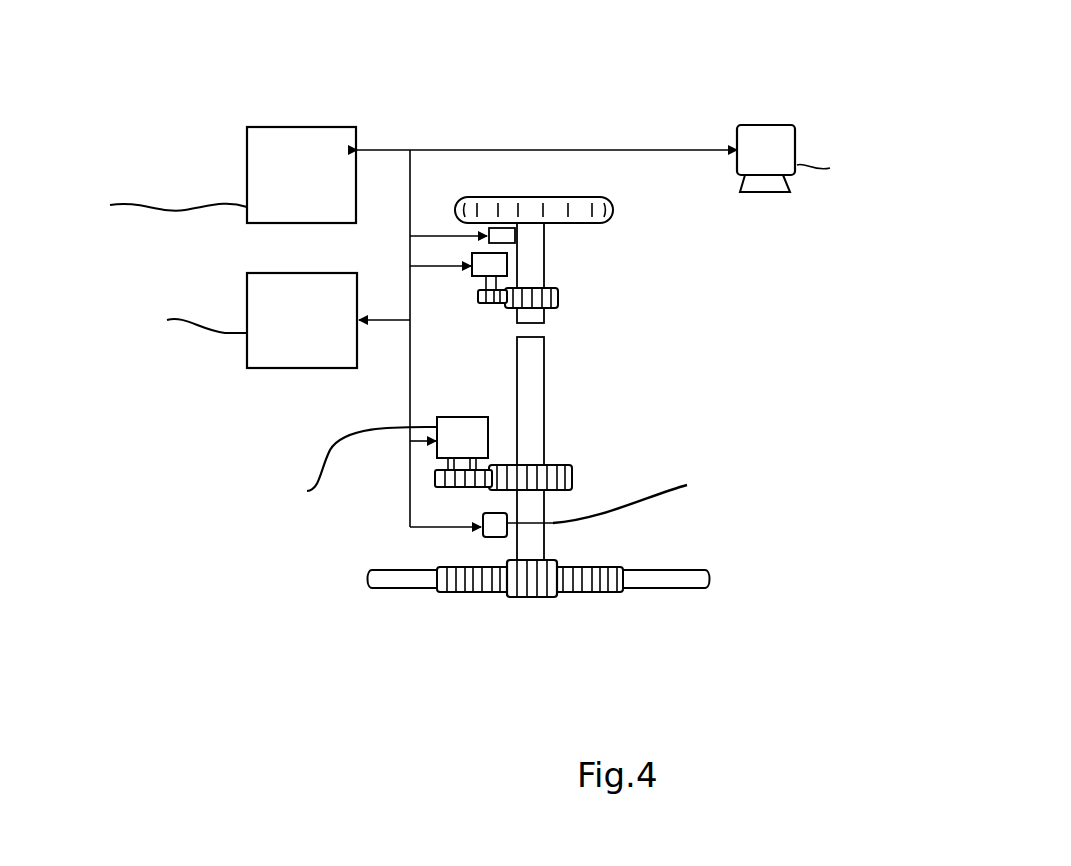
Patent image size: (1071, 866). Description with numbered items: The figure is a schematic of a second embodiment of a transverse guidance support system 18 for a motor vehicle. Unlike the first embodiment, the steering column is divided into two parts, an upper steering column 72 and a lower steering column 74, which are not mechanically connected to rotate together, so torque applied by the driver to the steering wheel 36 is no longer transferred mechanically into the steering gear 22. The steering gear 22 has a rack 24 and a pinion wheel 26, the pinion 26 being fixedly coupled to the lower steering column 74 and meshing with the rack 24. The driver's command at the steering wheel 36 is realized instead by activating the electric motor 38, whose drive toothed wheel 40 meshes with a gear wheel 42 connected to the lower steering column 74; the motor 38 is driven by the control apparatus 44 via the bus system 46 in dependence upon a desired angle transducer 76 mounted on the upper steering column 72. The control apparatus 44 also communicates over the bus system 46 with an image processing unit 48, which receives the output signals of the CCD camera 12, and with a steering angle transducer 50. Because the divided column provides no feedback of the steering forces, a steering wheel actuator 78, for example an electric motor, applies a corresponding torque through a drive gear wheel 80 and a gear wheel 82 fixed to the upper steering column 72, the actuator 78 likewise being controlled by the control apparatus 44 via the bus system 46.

The CCD camera 12 is at (797, 146).
The transverse guidance support system 18 is at (617, 352).
The steering gear 22 is at (588, 643).
The rack 24 is at (590, 567).
The pinion wheel 26 is at (522, 598).
The steering wheel 36 is at (580, 196).
The electric motor 38 is at (462, 417).
The drive toothed wheel 40 is at (437, 481).
The gear wheel 42 is at (573, 475).
The control apparatus 44 is at (283, 368).
The bus system 46 is at (410, 247).
The image processing unit 48 is at (292, 127).
The steering angle transducer 50 is at (492, 541).
The upper steering column 72 is at (545, 255).
The lower steering column 74 is at (545, 403).
The desired angle transducer 76 is at (485, 233).
The steering wheel actuator 78 is at (474, 278).
The drive gear wheel 80 is at (490, 304).
The gear wheel 82 is at (560, 298).